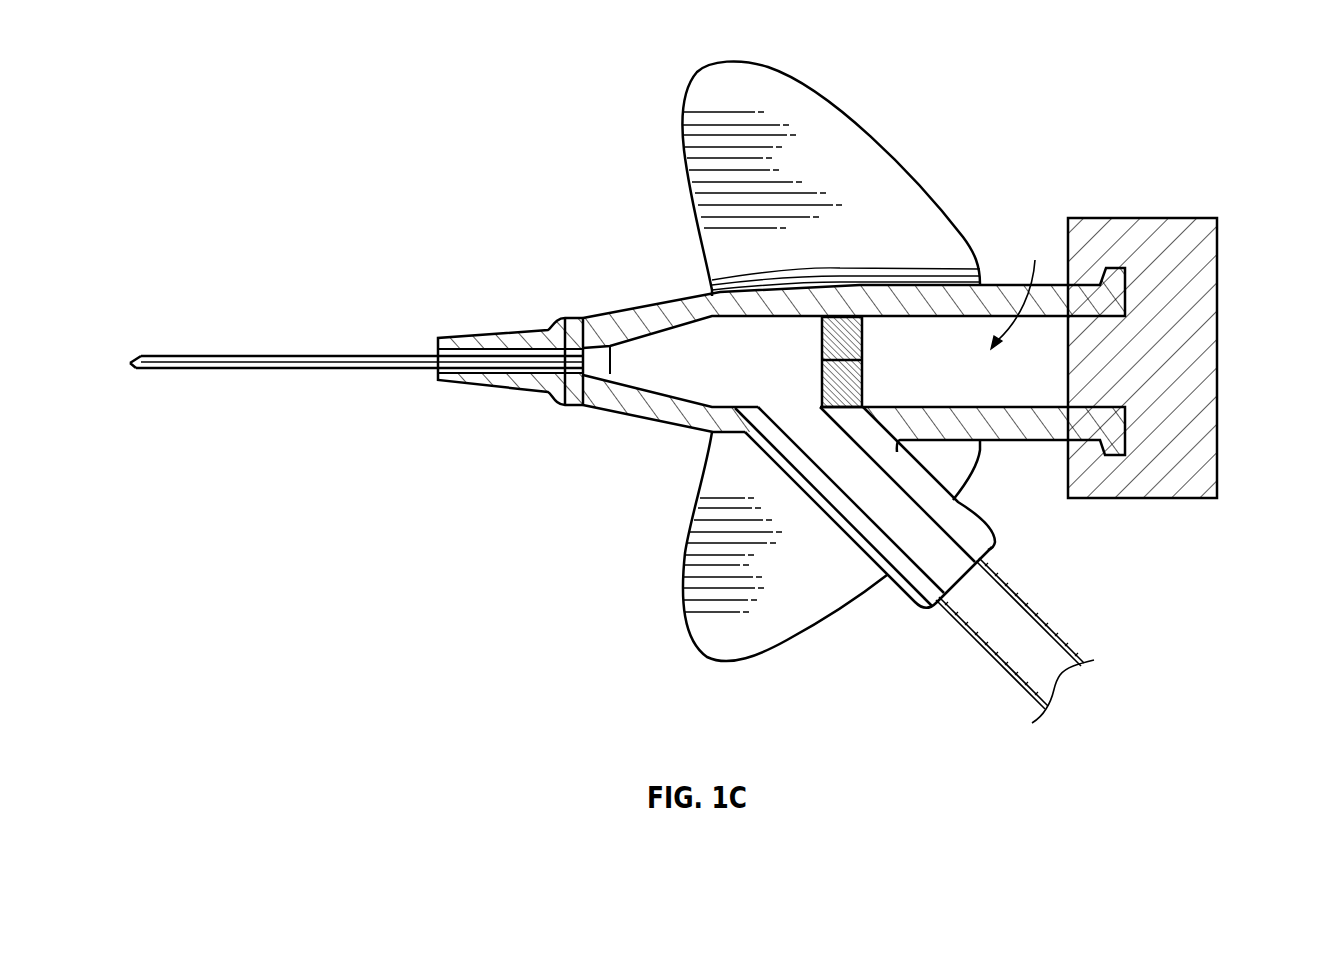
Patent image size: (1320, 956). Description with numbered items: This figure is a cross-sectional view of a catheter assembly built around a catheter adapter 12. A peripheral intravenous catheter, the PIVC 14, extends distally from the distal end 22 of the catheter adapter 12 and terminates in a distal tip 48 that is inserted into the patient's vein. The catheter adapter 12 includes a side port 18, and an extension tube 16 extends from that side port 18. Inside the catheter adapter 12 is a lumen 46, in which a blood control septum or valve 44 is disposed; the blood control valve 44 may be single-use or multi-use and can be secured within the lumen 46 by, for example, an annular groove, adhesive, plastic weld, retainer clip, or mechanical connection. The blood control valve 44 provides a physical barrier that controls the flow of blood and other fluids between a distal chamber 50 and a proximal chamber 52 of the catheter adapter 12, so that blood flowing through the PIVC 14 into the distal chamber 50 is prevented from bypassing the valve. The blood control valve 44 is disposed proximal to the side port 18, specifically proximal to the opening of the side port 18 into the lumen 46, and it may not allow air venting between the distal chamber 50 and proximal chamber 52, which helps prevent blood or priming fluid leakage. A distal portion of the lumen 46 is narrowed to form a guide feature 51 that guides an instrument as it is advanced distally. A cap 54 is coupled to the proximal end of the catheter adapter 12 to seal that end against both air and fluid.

The catheter adapter 12 is at (834, 361).
The PIVC 14 is at (355, 352).
The extension tube 16 is at (1030, 607).
The side port 18 is at (912, 608).
The distal end 22 is at (440, 344).
The blood control valve 44 is at (848, 330).
The lumen 46 is at (1020, 289).
The distal tip 48 is at (131, 366).
The distal chamber 50 is at (756, 372).
The guide feature 51 is at (660, 395).
The proximal chamber 52 is at (919, 372).
The cap 54 is at (1212, 325).